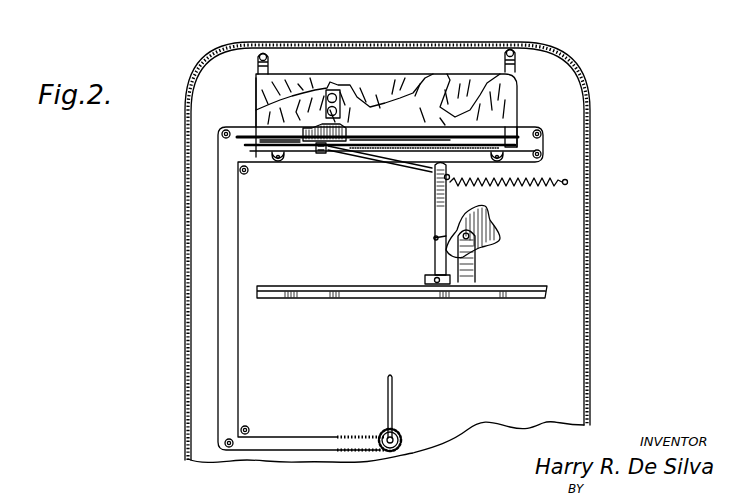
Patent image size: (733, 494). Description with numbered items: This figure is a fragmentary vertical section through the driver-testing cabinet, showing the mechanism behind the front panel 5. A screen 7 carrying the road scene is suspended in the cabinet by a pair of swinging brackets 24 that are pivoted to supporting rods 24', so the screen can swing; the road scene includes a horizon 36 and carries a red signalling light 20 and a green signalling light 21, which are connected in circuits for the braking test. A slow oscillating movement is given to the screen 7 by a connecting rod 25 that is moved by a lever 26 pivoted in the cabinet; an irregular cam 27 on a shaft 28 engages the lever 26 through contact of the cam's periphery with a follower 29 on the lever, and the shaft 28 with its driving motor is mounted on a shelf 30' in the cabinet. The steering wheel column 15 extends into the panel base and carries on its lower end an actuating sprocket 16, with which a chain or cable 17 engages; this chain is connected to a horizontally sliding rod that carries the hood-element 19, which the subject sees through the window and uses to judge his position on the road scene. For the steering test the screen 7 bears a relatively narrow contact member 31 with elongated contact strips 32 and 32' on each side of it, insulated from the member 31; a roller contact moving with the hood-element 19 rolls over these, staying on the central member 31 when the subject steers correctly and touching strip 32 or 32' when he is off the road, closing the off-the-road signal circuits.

The front panel 5 is at (598, 231).
The screen 7 is at (461, 80).
The column 15 is at (395, 393).
The actuating sprocket 16 is at (401, 437).
The chain or cable 17 is at (545, 140).
The hood-element 19 is at (307, 153).
The red signalling light 20 is at (341, 92).
The green signalling light 21 is at (345, 106).
The swinging brackets 24 is at (380, 47).
The supporting rods 24' is at (396, 46).
The connecting rod 25 is at (403, 173).
The lever 26 is at (431, 213).
The irregular cam 27 is at (493, 223).
The shaft 28 is at (469, 238).
The follower 29 is at (434, 238).
The shelf 30' is at (402, 309).
The contact member 31 is at (352, 157).
The contact strip 32 is at (306, 181).
The contact strip 32' is at (493, 167).
The horizon 36 is at (403, 90).